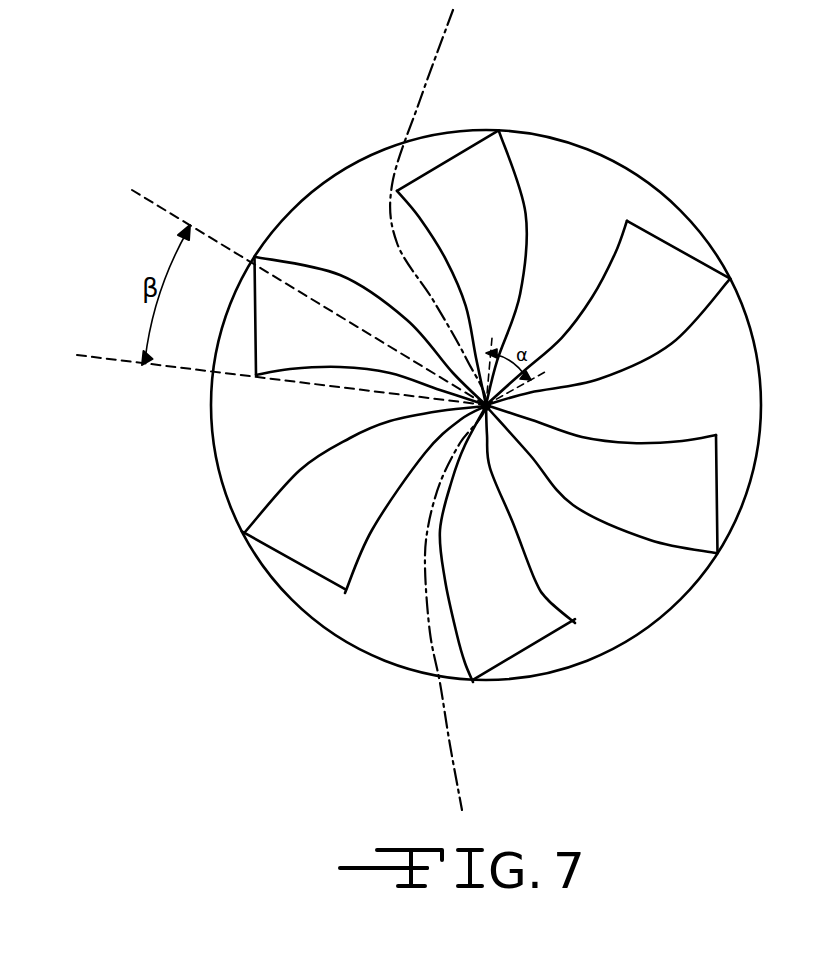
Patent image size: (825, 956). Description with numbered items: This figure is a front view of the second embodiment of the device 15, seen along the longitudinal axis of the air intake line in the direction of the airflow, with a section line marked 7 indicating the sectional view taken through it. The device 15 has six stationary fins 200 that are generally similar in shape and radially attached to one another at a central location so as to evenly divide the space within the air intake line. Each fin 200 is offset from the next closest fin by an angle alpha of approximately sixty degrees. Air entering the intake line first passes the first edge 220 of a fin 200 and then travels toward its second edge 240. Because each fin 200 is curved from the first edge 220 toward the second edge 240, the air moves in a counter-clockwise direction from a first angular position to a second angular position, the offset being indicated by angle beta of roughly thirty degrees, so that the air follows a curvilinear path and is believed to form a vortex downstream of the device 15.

The section line 7- 7 is at (447, 20).
The device 15 is at (662, 228).
The fin 200 is at (503, 158).
The first edge 220 is at (328, 274).
The second edge 240 is at (447, 260).